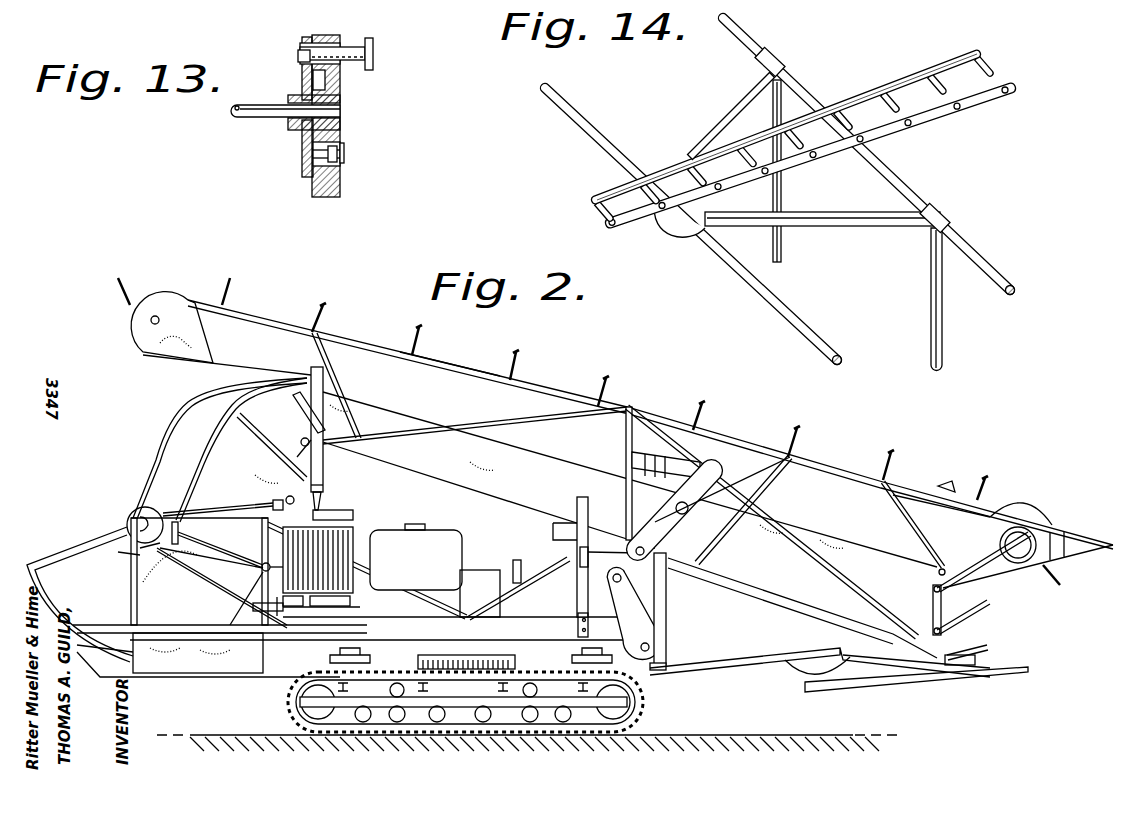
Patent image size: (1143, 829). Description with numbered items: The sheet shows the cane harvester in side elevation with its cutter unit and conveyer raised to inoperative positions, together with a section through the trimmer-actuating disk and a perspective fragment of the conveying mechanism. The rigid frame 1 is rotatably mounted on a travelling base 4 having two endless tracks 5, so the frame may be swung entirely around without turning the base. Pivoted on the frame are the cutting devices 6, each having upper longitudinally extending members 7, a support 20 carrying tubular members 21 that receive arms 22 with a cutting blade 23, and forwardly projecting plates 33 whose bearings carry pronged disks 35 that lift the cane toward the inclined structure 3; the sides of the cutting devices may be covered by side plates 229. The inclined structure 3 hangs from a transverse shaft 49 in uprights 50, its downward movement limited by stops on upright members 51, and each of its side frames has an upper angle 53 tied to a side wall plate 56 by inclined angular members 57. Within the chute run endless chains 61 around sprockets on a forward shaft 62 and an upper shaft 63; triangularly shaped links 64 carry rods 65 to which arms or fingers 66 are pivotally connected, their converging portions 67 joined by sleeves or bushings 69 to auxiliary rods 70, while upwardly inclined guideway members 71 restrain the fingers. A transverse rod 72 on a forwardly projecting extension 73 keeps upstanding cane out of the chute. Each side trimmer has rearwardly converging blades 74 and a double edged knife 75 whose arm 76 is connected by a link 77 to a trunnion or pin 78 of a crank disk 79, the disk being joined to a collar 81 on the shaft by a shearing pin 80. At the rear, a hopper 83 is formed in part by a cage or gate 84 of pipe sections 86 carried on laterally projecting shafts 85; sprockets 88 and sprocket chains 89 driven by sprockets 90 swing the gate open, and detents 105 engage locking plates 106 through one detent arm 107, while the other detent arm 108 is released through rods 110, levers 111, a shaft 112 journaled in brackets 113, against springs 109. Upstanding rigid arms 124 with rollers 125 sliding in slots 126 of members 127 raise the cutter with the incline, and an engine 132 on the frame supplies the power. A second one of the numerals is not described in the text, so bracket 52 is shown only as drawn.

In FIG. 2, the rigid frame 1 is at (296, 648).
In FIG. 2, the inclined structure 3 is at (535, 390).
In FIG. 2, the travelling base 4 is at (300, 702).
In FIG. 2, the endless tracks 5 is at (645, 715).
In FIG. 2, the cutting devices 6 is at (692, 670).
In FIG. 2, the upper longitudinally extending member 7 is at (747, 588).
In FIG. 2, the support 20 is at (815, 688).
In FIG. 2, the tubular members 21 is at (858, 683).
In FIG. 2, the arms 22 is at (948, 672).
In FIG. 2, the cutting blade 23 is at (1000, 670).
In FIG. 2, the plates 33 is at (915, 668).
In FIG. 2, the pronged disks 35 is at (962, 668).
In FIG. 2, the transverse shaft 49 is at (300, 443).
In FIG. 2, the uprights 50 is at (311, 372).
In FIG. 2, the upright members 51 is at (632, 460).
In FIG. 2, the bracket 52 is at (551, 524).
In FIG. 2, the upper angle 53 is at (465, 366).
In FIG. 2, the side wall plate 56 is at (478, 478).
In FIG. 2, the inclined angular members 57 is at (540, 418).
In FIG. 14, the endless chains 61 is at (804, 139).
In FIG. 13, the shaft 62 is at (320, 80).
In FIG. 2, the shaft 63 is at (160, 318).
In FIG. 14, the triangularly shaped links 64 is at (668, 226).
In FIG. 14, the rods 65 is at (750, 285).
In FIG. 14, the arms or fingers 66 is at (781, 193).
In FIG. 2, the arms or fingers 66 is at (325, 318).
In FIG. 14, the converging portions 67 is at (787, 62).
In FIG. 14, the sleeves or bushings 69 is at (945, 208).
In FIG. 14, the auxiliary rods 70 is at (893, 160).
In FIG. 2, the upwardly inclined guideway members 71 is at (950, 484).
In FIG. 2, the transverse rod 72 is at (1108, 543).
In FIG. 2, the forwardly projecting extension 73 is at (1065, 573).
In FIG. 2, the rearwardly converging blades 74 is at (971, 617).
In FIG. 2, the double edged knife 75 is at (990, 647).
In FIG. 2, the arm 76 is at (933, 610).
In FIG. 2, the link 77 is at (985, 560).
In FIG. 13, the trunnion or pin 78 is at (350, 50).
In FIG. 13, the crank disk 79 is at (340, 90).
In FIG. 2, the crank disk 79 is at (1025, 540).
In FIG. 13, the shearing pin 80 is at (344, 153).
In FIG. 13, the collar 81 is at (292, 130).
In FIG. 2, the hopper 83 is at (200, 640).
In FIG. 2, the cage or gate 84 is at (95, 520).
In FIG. 2, the laterally projecting shafts 85 is at (143, 524).
In FIG. 2, the sections of pipe 86 is at (55, 605).
In FIG. 2, the sprockets 88 is at (168, 510).
In FIG. 2, the sprocket chains 89 is at (205, 470).
In FIG. 2, the sprockets 90 is at (287, 497).
In FIG. 2, the detents 105 is at (200, 547).
In FIG. 2, the locking plates 106 is at (135, 545).
In FIG. 2, the detent arm 107 is at (118, 553).
In FIG. 2, the detent arm 108 is at (263, 510).
In FIG. 2, the spring 109 is at (170, 566).
In FIG. 2, the rods 110 is at (211, 557).
In FIG. 2, the levers 111 is at (262, 566).
In FIG. 2, the shaft 112 is at (222, 588).
In FIG. 2, the brackets 113 is at (240, 612).
In FIG. 2, the upstanding rigid arms 124 is at (666, 596).
In FIG. 2, the rollers 125 is at (722, 497).
In FIG. 2, the slots 126 is at (636, 556).
In FIG. 2, the members 127 is at (716, 470).
In FIG. 2, the engine 132 is at (355, 525).
In FIG. 2, the side plates 229 is at (765, 665).